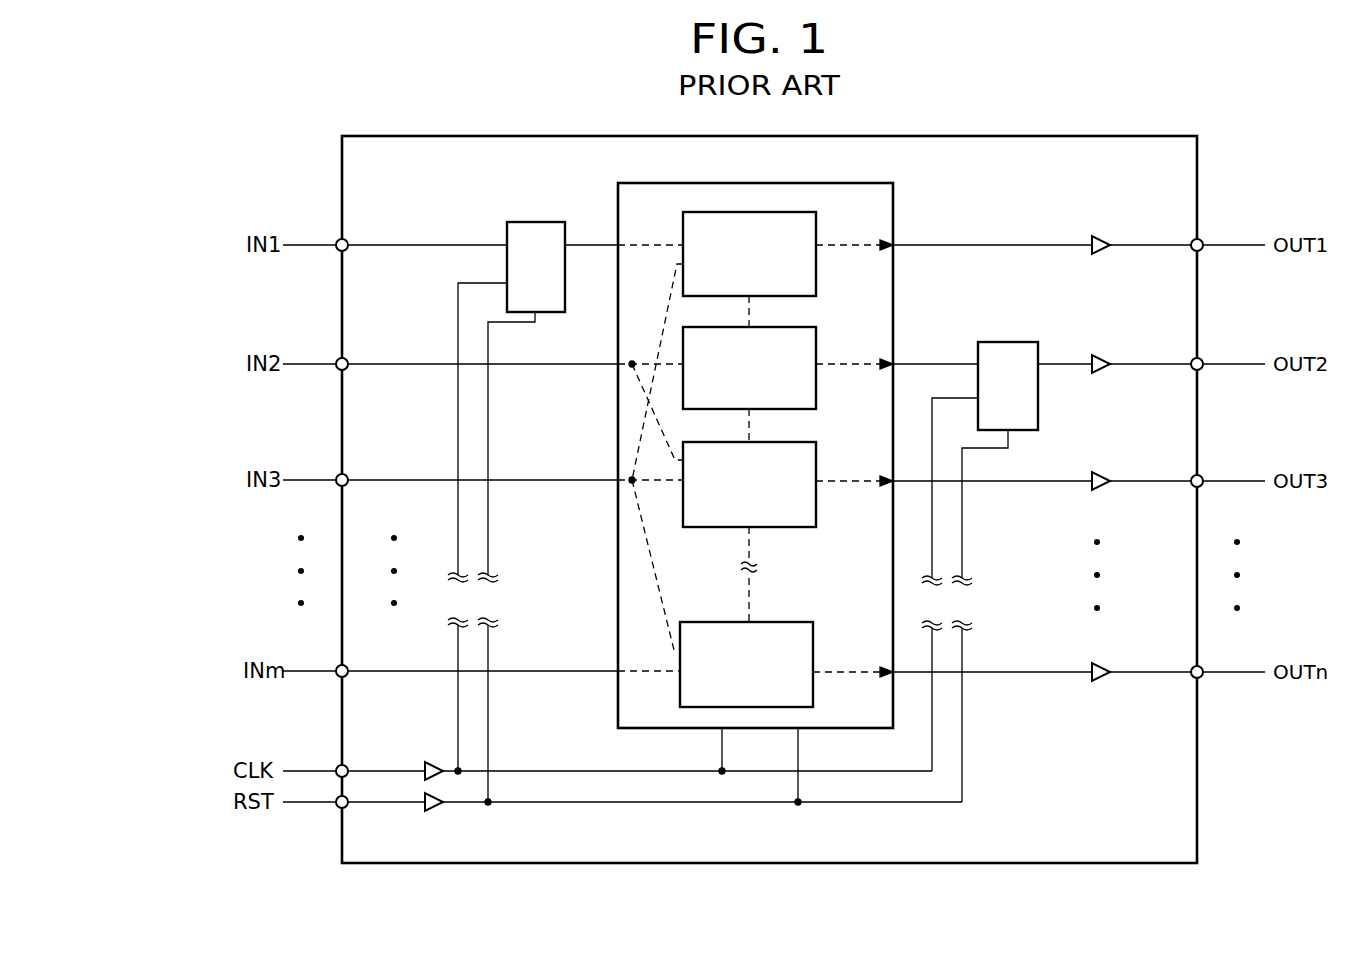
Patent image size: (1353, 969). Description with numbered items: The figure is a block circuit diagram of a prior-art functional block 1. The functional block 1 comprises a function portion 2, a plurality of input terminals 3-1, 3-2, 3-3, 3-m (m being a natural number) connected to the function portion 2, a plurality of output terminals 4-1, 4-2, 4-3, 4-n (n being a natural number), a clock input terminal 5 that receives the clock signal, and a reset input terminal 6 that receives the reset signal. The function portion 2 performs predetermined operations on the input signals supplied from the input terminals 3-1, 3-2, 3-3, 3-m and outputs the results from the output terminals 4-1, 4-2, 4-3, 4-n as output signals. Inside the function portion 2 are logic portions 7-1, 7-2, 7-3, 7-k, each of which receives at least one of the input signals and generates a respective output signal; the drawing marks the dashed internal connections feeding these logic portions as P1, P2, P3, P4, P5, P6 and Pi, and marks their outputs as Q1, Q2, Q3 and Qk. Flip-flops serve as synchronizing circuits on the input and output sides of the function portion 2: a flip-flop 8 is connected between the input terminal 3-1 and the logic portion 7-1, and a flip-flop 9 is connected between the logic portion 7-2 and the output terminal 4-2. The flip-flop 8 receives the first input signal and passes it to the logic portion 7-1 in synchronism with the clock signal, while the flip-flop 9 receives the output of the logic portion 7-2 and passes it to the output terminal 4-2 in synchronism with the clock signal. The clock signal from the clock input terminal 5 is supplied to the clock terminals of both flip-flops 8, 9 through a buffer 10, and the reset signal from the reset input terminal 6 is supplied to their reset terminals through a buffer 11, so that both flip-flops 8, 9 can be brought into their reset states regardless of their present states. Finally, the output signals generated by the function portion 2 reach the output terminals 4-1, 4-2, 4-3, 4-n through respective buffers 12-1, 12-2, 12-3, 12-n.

The functional block 1 is at (342, 183).
The function portion 2 is at (893, 201).
The input terminal 3-1 is at (347, 241).
The input terminal 3-2 is at (347, 360).
The input terminal 3-3 is at (347, 476).
The input terminal 3-m is at (347, 667).
The output terminal 4-1 is at (1201, 251).
The output terminal 4-2 is at (1201, 370).
The output terminal 4-3 is at (1201, 487).
The output terminal 4-n is at (1201, 678).
The clock input terminal 5 is at (347, 767).
The reset input terminal 6 is at (347, 807).
The logic portion 7-1 is at (818, 226).
The logic portion 7-2 is at (818, 343).
The logic portion 7-3 is at (818, 459).
The logic portion 7-k is at (815, 638).
The flip-flop 8 is at (507, 224).
The flip-flop 9 is at (1038, 416).
The buffer 10 is at (432, 760).
The buffer 11 is at (432, 812).
The buffer 12-1 is at (1100, 242).
The buffer 12-2 is at (1100, 361).
The buffer 12-3 is at (1100, 478).
The buffer 12-n is at (1100, 669).
The signal path P1 is at (655, 244).
The signal path P2 is at (663, 313).
The signal path P3 is at (636, 362).
The signal path P4 is at (660, 429).
The signal path P5 is at (661, 483).
The signal path P6 is at (656, 562).
The signal path Pi is at (648, 669).
The logic output Q1 is at (852, 249).
The logic output Q2 is at (852, 368).
The logic output Q3 is at (852, 485).
The logic output Qk is at (850, 676).